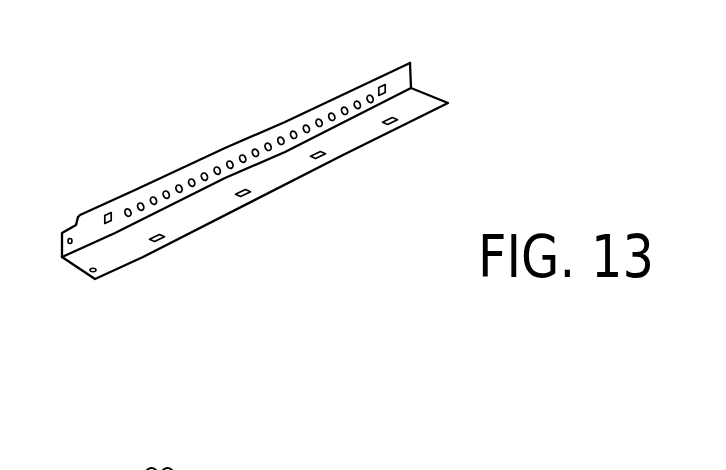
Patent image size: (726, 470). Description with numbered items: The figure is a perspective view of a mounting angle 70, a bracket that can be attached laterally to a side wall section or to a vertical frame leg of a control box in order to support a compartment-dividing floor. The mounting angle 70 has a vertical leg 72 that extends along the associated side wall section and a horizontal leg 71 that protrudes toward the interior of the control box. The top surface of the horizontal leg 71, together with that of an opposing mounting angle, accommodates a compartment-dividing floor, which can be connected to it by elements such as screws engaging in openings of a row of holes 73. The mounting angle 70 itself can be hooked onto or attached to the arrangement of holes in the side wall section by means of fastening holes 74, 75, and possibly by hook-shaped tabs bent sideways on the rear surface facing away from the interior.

The mounting angle 70 is at (254, 154).
The horizontal leg 71 is at (255, 190).
The vertical leg 72 is at (90, 222).
The row of holes 73 is at (185, 186).
The fastening hole 74 is at (383, 87).
The fastening hole 75 is at (332, 153).